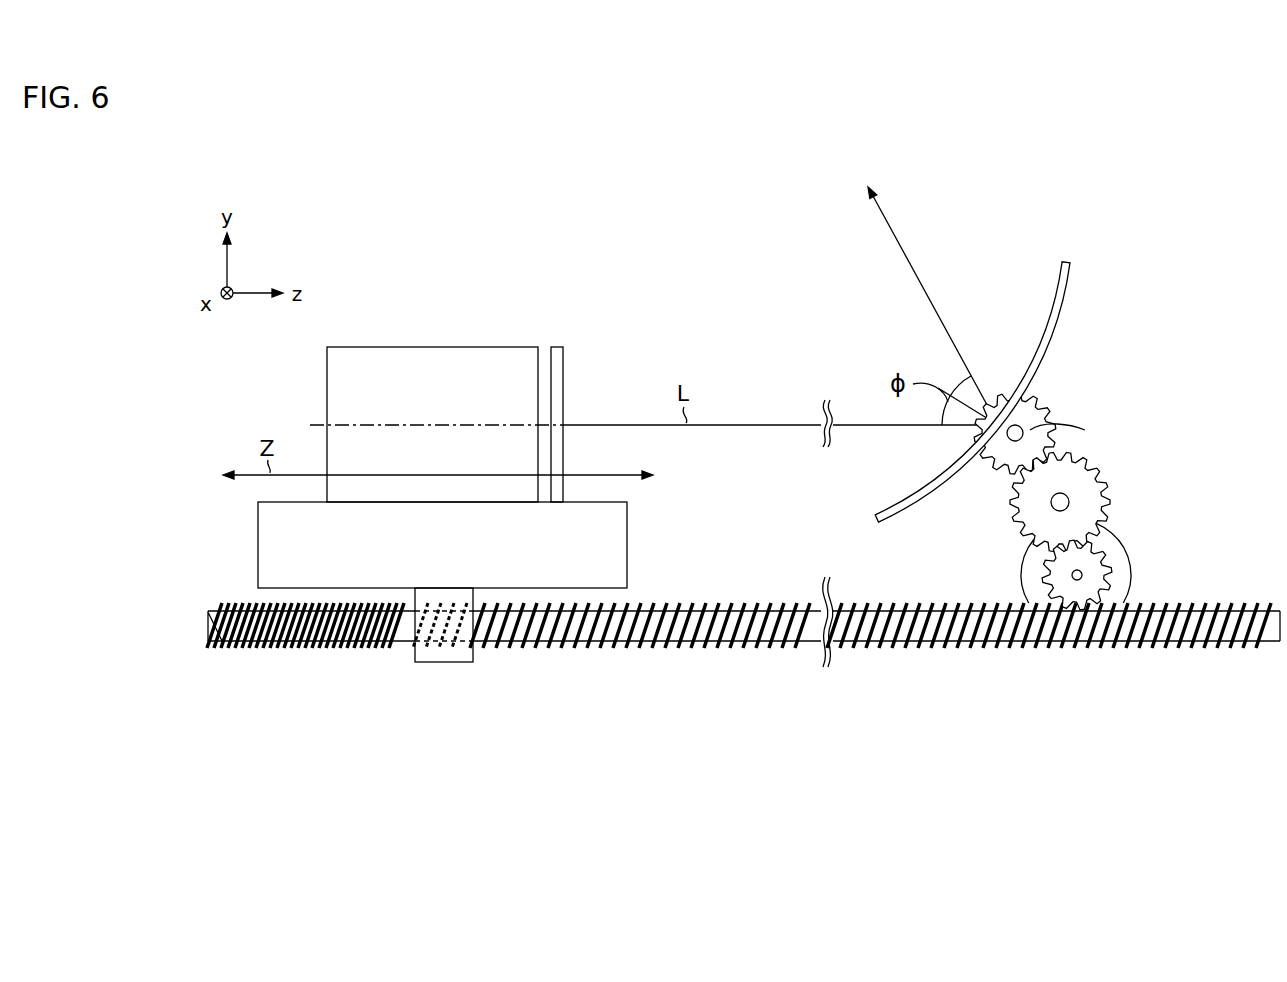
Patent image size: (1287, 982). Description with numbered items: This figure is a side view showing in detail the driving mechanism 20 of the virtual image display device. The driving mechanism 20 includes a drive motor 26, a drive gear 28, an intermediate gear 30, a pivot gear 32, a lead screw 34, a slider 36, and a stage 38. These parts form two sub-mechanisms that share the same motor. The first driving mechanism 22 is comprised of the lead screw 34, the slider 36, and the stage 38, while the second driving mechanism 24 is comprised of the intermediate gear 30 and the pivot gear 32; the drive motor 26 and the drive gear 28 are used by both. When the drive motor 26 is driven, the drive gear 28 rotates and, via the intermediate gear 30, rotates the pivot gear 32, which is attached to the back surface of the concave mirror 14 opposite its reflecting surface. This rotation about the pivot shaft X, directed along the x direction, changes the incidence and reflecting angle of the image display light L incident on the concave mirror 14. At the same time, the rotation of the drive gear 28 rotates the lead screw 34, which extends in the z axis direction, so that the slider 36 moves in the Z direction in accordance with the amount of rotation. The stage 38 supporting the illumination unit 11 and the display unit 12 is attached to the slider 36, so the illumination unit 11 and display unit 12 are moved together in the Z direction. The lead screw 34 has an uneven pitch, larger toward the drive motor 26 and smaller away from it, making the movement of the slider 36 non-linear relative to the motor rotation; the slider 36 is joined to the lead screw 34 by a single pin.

The illumination unit 11 is at (435, 346).
The display unit 12 is at (556, 346).
The concave mirror 14 is at (1068, 289).
The driving mechanism 20 is at (1189, 362).
The first driving mechanism 22 is at (220, 514).
The second driving mechanism 24 is at (1167, 439).
The drive motor 26 is at (1131, 574).
The drive gear 28 is at (1104, 548).
The intermediate gear 30 is at (1111, 490).
The pivot gear 32 is at (1058, 398).
The lead screw 34 is at (216, 656).
The slider 36 is at (440, 663).
The stage 38 is at (628, 527).